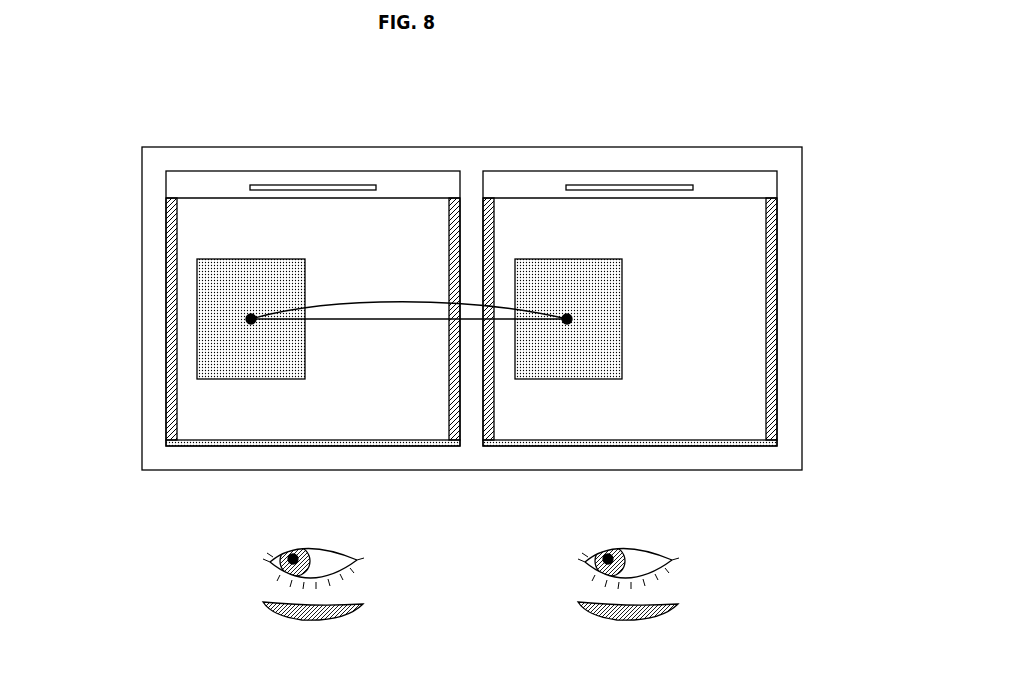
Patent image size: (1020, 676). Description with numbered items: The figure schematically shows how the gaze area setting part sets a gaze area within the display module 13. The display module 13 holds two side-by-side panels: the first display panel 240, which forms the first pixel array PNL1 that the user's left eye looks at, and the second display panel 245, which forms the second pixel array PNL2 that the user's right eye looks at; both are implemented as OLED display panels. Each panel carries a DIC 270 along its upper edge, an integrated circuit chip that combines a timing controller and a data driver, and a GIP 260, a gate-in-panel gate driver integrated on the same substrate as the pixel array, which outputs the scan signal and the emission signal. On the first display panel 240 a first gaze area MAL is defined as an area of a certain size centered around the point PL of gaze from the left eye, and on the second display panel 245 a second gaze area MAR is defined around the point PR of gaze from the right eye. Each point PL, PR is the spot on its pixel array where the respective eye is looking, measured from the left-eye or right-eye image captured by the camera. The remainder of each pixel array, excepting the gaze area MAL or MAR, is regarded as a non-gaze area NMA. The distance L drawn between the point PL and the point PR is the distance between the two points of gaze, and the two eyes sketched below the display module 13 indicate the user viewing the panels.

The display module 13 is at (802, 278).
The first display panel 240 is at (416, 171).
The second display panel 245 is at (733, 171).
The GIP 260 is at (166, 357).
The DIC 270 is at (311, 185).
The first gaze area MAL is at (305, 277).
The second gaze area MAR is at (622, 277).
The non-gaze area NMA is at (402, 348).
The distance between the points of gaze L is at (409, 303).
The point of gaze from the left eye PL is at (251, 324).
The point of gaze from the right eye PR is at (567, 324).